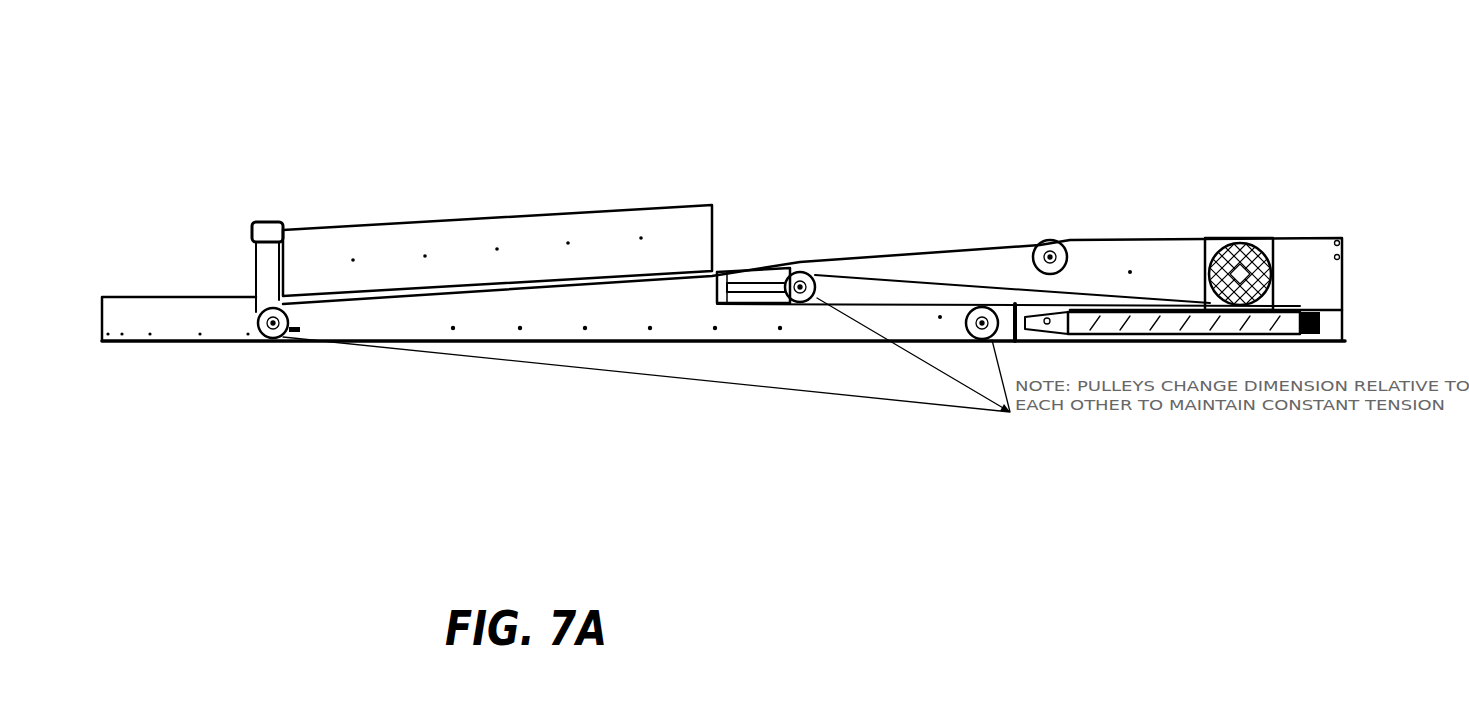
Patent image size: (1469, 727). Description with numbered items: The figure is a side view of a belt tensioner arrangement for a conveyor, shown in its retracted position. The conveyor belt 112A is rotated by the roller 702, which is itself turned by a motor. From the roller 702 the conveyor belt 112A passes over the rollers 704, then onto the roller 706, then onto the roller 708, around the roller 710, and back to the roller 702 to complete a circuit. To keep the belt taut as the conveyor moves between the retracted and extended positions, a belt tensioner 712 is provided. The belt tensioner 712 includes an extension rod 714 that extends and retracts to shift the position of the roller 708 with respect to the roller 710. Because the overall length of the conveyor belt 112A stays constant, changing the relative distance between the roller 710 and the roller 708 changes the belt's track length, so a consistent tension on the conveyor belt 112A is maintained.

The conveyor belt 112A is at (1143, 231).
The roller 702 is at (1233, 258).
The rollers 704 is at (1050, 257).
The roller 706 is at (283, 337).
The roller 708 is at (978, 338).
The roller 710 is at (797, 266).
The belt tensioner 712 is at (1090, 325).
The extension rod 714 is at (1047, 323).